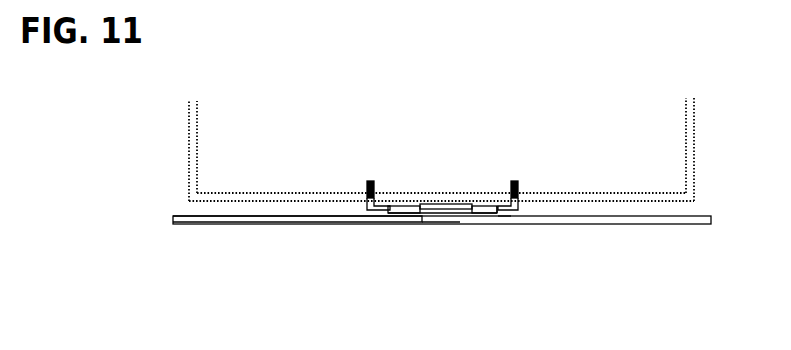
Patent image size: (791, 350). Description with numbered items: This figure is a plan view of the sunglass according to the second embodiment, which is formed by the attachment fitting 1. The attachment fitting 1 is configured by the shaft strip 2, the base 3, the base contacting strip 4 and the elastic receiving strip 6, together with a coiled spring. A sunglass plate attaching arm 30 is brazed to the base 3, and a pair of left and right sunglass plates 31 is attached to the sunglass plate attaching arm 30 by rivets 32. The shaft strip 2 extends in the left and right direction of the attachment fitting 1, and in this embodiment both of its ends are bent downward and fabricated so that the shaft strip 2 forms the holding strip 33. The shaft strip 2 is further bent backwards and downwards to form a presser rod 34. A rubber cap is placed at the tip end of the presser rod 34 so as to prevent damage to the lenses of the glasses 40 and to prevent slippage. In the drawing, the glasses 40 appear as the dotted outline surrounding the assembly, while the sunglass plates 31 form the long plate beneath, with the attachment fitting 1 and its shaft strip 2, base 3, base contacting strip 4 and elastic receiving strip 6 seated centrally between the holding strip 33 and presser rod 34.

The attachment fitting 1 is at (442, 159).
The shaft strip 2 is at (500, 214).
The base 3 is at (430, 207).
The base contacting strip 4 is at (486, 206).
The elastic receiving strip 6 is at (392, 205).
The sunglass plate attaching arm 30 is at (440, 216).
The sunglass plates 31 is at (702, 225).
The rivets 32 is at (397, 225).
The holding strip 33 is at (513, 218).
The presser rod 34 is at (516, 190).
The glasses 40 is at (603, 195).